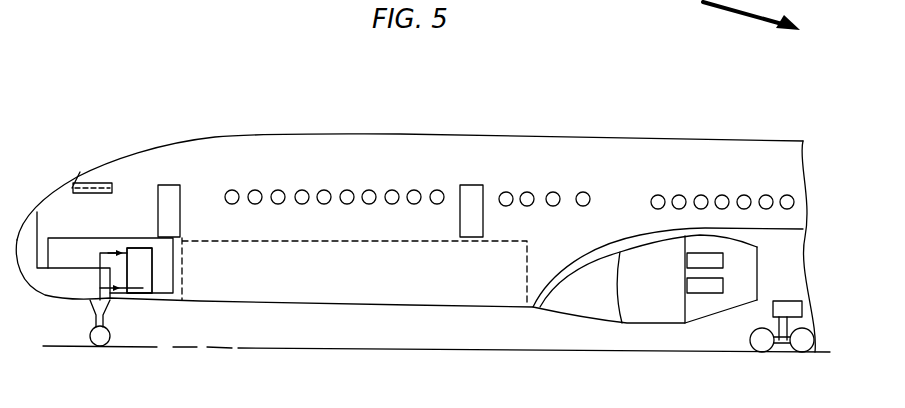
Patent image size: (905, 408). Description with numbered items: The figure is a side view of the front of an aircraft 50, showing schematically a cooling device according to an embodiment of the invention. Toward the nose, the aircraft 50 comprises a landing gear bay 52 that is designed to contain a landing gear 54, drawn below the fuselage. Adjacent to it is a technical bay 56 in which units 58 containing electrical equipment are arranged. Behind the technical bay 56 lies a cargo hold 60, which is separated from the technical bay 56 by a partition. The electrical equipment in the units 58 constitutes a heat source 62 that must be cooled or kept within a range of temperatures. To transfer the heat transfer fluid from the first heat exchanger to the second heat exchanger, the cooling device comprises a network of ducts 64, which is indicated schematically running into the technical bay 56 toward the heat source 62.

The aircraft 50 is at (384, 108).
The landing gear bay 52 is at (66, 283).
The landing gear 54 is at (116, 326).
The technical bay 56 is at (60, 246).
The units containing electrical equipment 58 is at (148, 300).
The cargo hold 60 is at (517, 242).
The heat source 62 is at (143, 244).
The network of ducts 64 is at (112, 250).